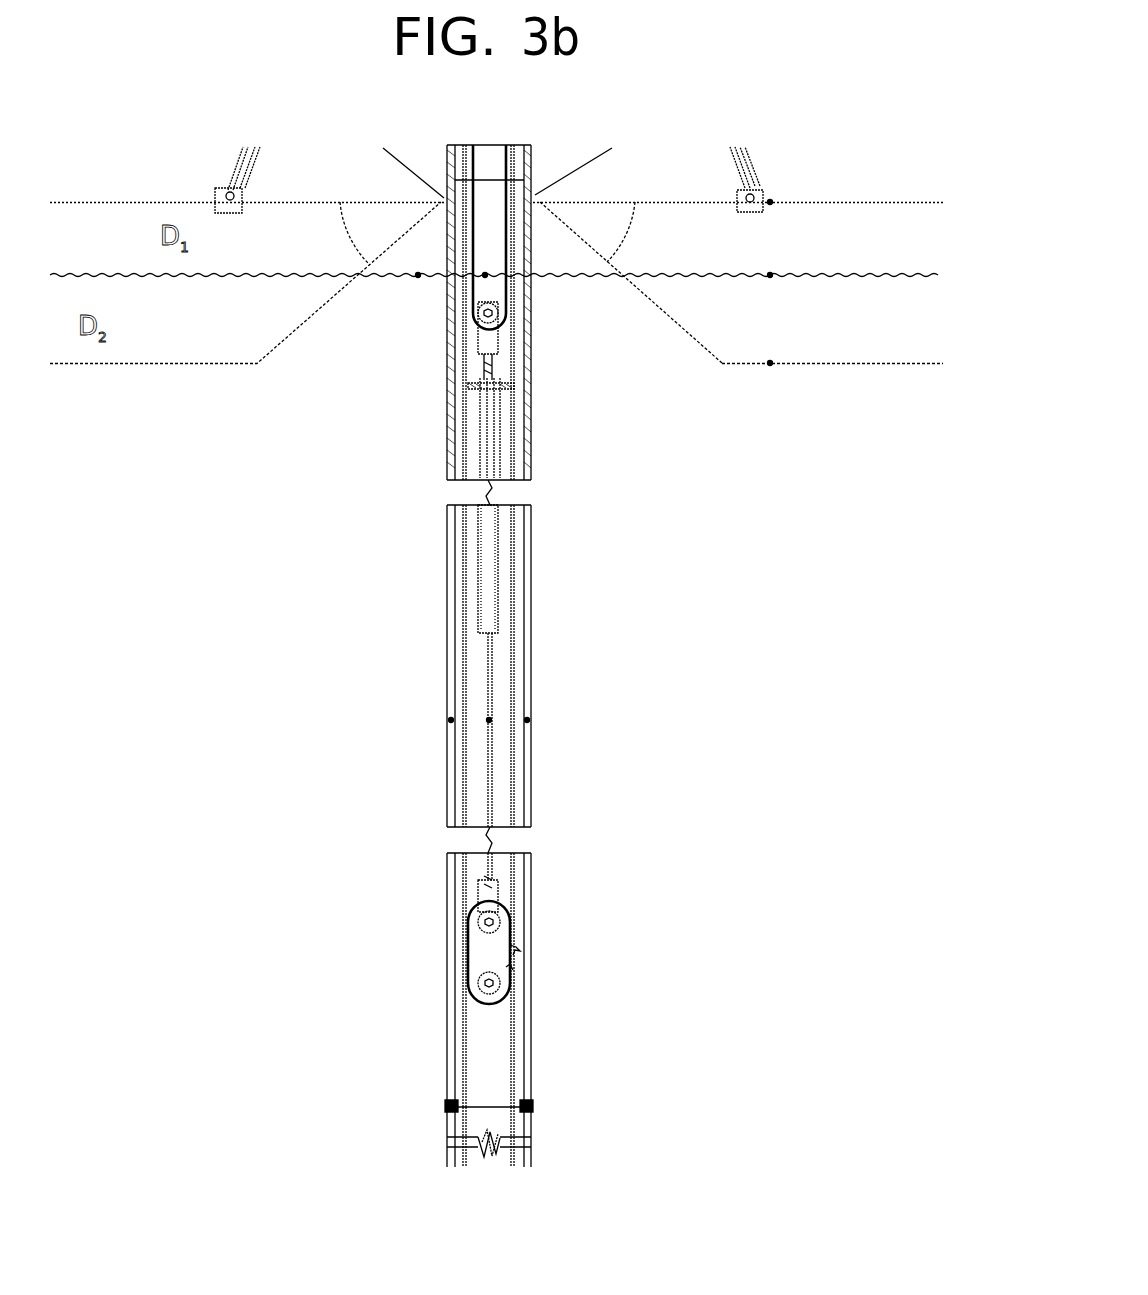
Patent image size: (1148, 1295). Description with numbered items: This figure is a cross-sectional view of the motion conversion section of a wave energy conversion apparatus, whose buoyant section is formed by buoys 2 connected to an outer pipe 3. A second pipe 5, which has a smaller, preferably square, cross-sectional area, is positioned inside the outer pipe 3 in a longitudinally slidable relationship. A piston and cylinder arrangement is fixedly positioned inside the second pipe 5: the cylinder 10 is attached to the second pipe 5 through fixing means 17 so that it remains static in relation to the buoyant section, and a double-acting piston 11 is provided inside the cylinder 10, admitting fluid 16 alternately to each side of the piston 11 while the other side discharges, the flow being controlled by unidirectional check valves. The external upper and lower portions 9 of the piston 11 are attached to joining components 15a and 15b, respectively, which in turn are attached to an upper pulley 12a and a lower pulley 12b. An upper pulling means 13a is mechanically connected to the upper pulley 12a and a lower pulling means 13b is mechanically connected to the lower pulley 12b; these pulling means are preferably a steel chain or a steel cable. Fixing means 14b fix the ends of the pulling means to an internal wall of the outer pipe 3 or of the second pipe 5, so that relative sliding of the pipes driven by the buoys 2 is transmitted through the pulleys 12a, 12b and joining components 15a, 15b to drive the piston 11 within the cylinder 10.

The buoys 2 is at (690, 250).
The outer pipe 3 is at (616, 894).
The second pipe 5 is at (515, 676).
The external upper and lower portions of the piston 9 is at (400, 666).
The cylinder 10 is at (480, 536).
The double-acting piston 11 is at (487, 562).
The upper pulley 12a is at (508, 324).
The lower pulley 12b is at (470, 980).
The upper pulling means 13a is at (508, 292).
The lower pulling means 13b is at (510, 922).
The fixing means 14b is at (520, 948).
The upper joining component 15a is at (462, 351).
The lower joining component 15b is at (487, 886).
The fluid 16 is at (497, 583).
The fixing means 17 is at (508, 387).